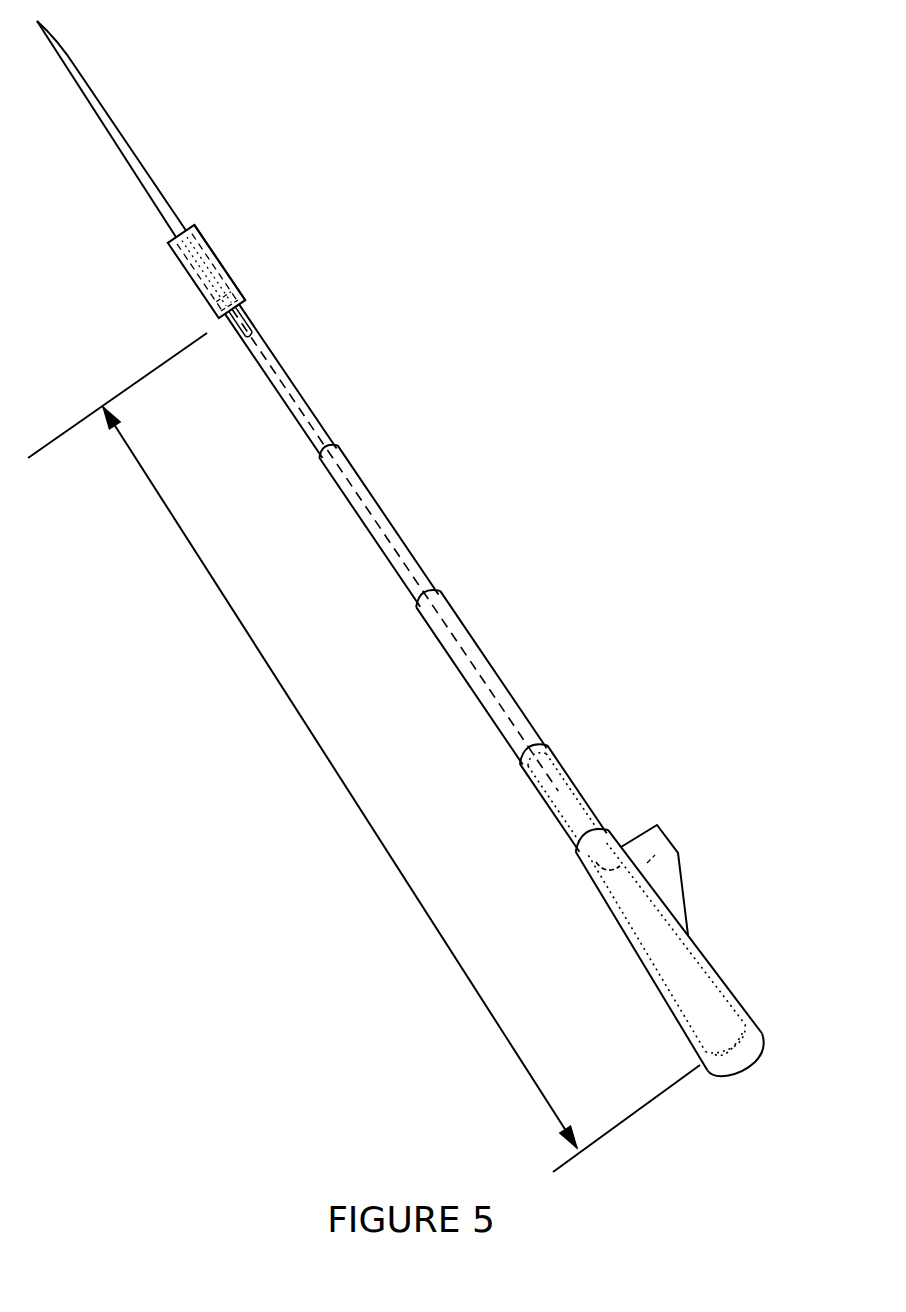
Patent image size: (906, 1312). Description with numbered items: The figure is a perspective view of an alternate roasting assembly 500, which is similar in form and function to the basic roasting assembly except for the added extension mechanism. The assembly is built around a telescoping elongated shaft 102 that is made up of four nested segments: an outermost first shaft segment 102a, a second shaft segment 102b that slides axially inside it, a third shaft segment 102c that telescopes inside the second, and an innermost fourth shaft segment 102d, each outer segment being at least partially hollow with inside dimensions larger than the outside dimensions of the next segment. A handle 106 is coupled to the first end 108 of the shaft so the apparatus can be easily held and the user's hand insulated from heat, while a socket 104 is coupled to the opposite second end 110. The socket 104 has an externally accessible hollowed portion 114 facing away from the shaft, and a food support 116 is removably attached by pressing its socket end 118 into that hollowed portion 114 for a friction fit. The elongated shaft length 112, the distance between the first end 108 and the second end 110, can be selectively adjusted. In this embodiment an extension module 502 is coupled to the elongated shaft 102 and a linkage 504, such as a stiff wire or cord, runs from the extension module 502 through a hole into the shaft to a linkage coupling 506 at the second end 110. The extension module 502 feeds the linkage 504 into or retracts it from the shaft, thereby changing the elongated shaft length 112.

The roasting assembly 500 is at (560, 180).
The food support 116 is at (136, 152).
The socket 104 is at (212, 238).
The externally accessible hollowed portion 114 is at (222, 273).
The socket end 118 is at (217, 297).
The second end 110 is at (245, 333).
The linkage coupling 506 is at (257, 328).
The elongated shaft 102 is at (460, 595).
The fourth shaft segment 102d is at (288, 363).
The third shaft segment 102c is at (400, 525).
The second shaft segment 102b is at (497, 672).
The first shaft segment 102a is at (577, 780).
The handle 106 is at (757, 1017).
The extension module 502 is at (673, 845).
The linkage 504 is at (610, 870).
The first end 108 is at (722, 1050).
The elongated shaft length 112 is at (364, 752).